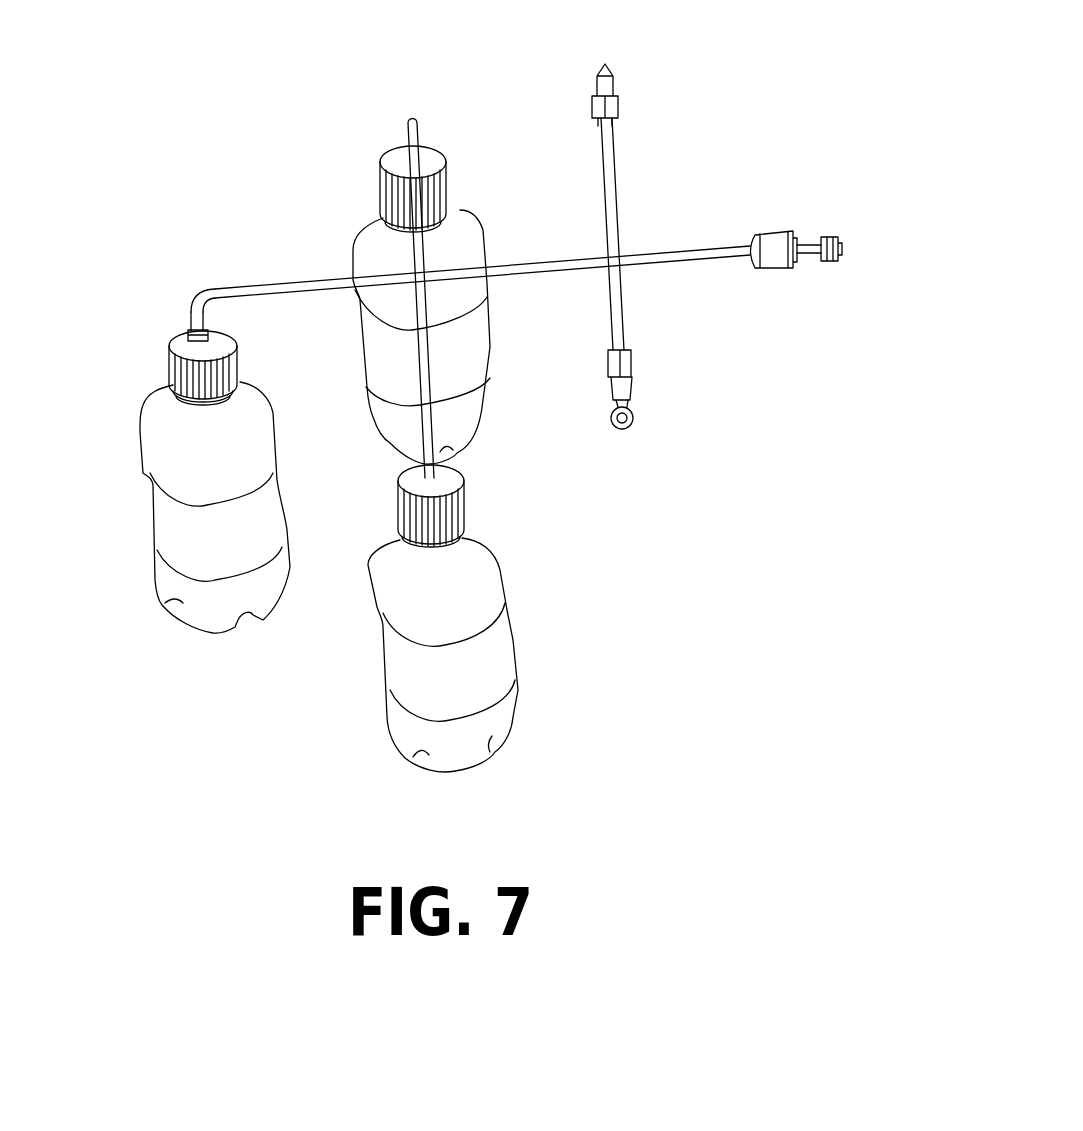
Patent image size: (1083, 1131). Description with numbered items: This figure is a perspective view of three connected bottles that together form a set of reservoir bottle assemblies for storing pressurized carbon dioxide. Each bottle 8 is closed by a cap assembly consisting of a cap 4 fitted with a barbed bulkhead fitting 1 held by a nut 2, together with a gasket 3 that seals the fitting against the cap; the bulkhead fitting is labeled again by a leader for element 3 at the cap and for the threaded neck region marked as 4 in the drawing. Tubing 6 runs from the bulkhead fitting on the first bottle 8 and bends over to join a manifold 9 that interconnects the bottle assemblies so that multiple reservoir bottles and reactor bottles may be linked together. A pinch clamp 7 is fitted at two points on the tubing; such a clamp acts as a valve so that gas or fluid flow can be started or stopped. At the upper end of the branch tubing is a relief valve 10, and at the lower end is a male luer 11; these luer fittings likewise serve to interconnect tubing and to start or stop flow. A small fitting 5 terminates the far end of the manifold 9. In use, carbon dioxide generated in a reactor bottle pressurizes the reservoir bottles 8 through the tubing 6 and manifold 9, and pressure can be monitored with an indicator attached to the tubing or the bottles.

The barbed bulkhead fitting 1 is at (190, 334).
The nut 2 is at (208, 338).
The cap 3 is at (173, 353).
The cap 4 is at (232, 358).
The end fitting 5 is at (833, 229).
The tubing 6 is at (243, 283).
The pinch clamp 7 is at (773, 220).
The bottle 8 is at (140, 456).
The manifold 9 is at (535, 257).
The relief valve 10 is at (618, 88).
The male luer 11 is at (640, 417).